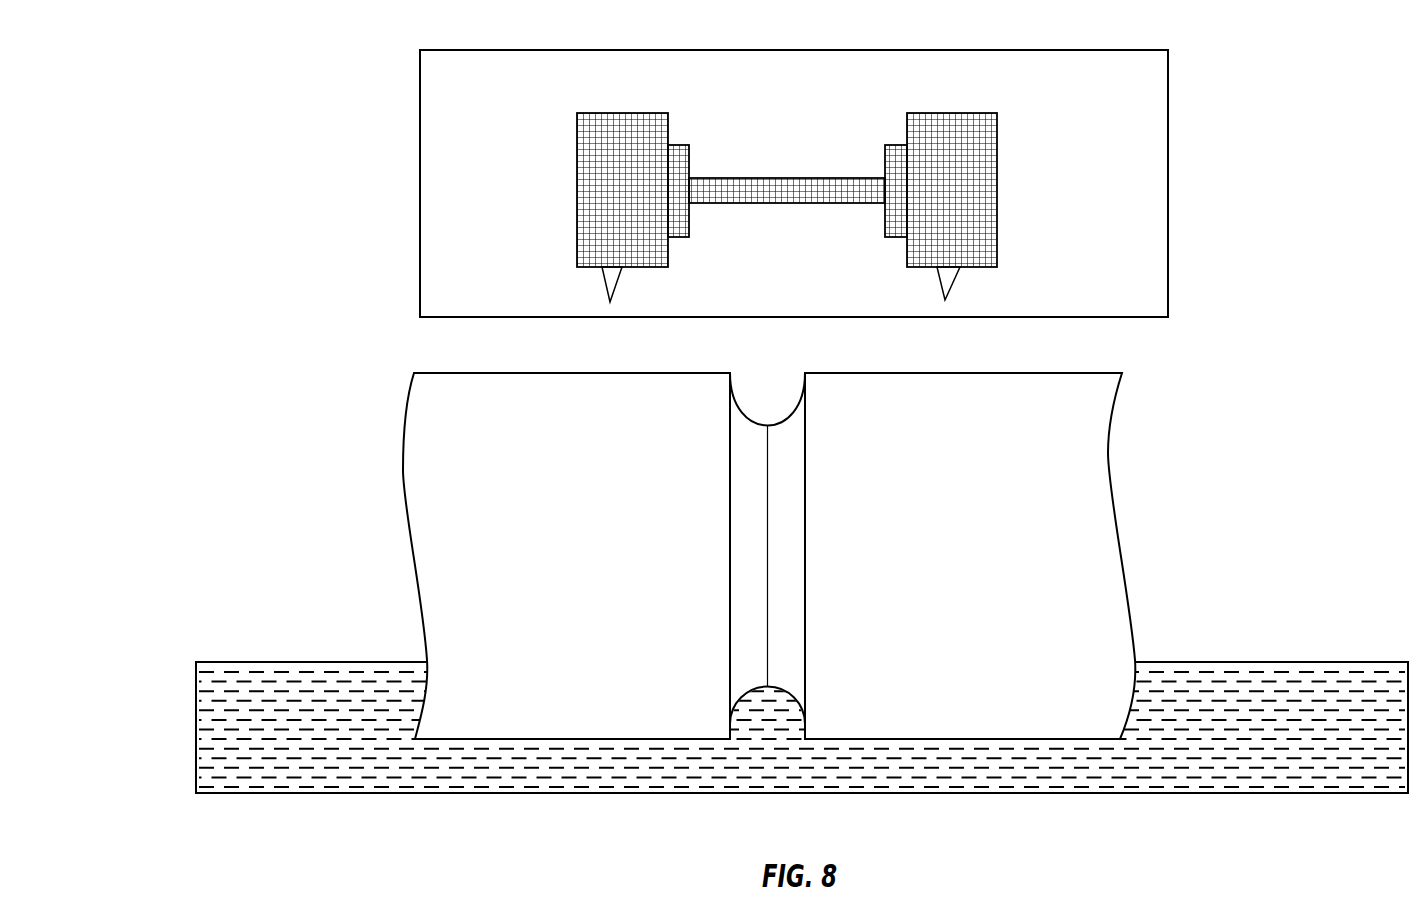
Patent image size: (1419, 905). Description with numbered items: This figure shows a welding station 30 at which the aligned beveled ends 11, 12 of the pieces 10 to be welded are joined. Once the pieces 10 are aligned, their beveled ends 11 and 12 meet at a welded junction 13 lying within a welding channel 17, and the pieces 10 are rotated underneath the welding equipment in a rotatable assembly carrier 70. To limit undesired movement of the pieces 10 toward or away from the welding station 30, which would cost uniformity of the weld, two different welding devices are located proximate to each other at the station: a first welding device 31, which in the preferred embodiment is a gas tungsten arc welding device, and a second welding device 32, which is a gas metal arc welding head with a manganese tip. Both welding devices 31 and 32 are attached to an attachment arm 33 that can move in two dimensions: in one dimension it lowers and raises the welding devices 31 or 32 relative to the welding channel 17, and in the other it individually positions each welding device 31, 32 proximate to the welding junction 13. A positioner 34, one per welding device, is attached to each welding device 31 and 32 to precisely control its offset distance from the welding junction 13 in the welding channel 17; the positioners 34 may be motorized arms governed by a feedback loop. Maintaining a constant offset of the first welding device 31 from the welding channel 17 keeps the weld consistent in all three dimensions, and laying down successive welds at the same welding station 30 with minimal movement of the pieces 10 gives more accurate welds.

The pieces to be welded 10 is at (507, 773).
The beveled end 11 is at (730, 760).
The beveled end 12 is at (808, 758).
The welded junction 13 is at (730, 665).
The welding channel 17 is at (762, 405).
The welding station 30 is at (418, 128).
The first welding device 31 is at (602, 273).
The welding device 32 is at (937, 273).
The attachment arm 33 is at (805, 205).
The positioner 34 is at (682, 142).
The rotatable assembly carrier 70 is at (349, 793).